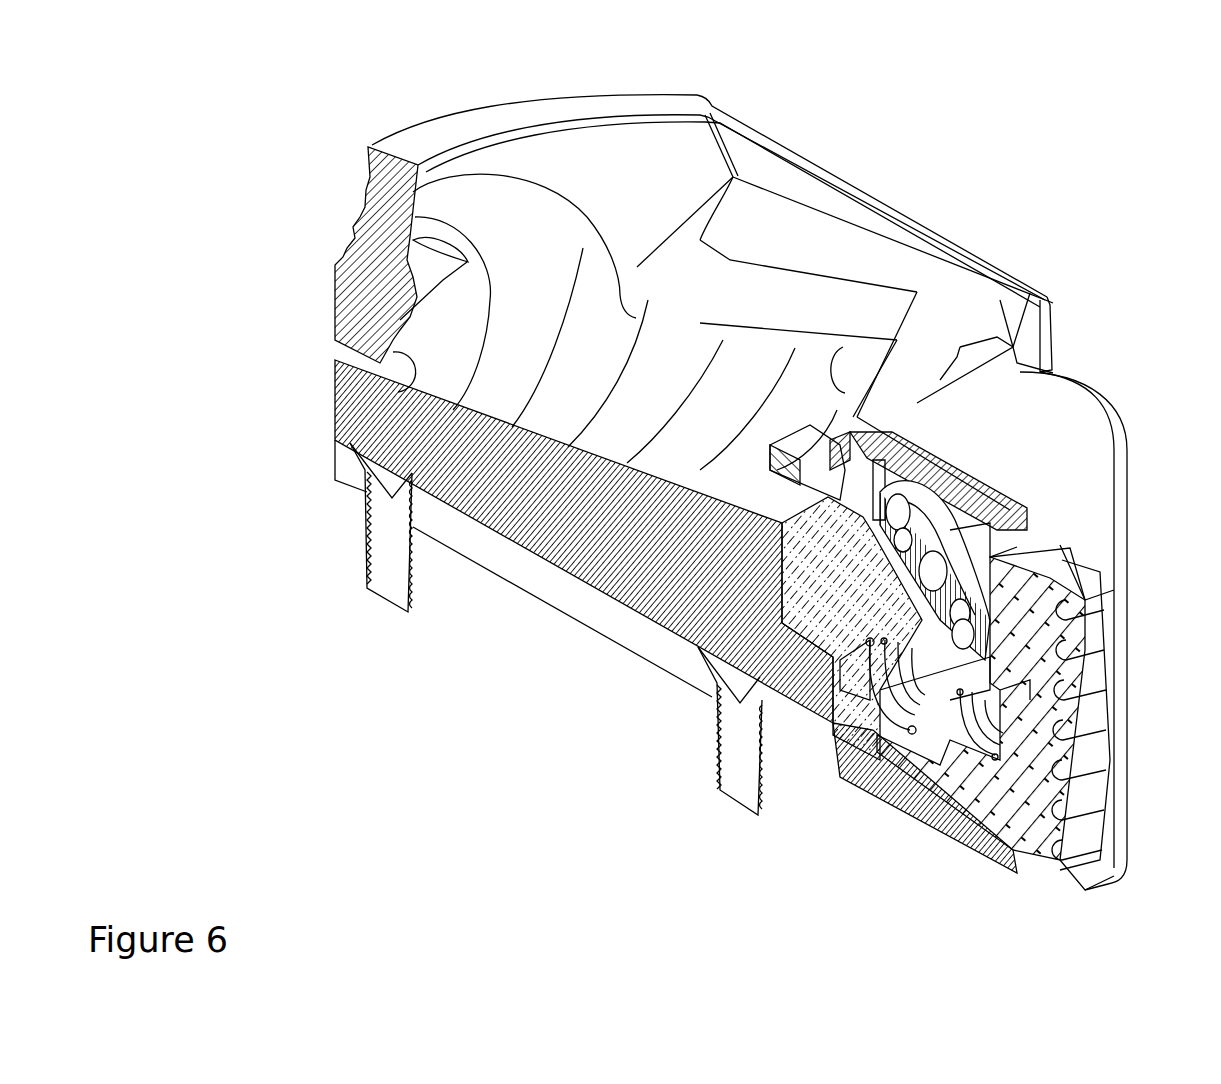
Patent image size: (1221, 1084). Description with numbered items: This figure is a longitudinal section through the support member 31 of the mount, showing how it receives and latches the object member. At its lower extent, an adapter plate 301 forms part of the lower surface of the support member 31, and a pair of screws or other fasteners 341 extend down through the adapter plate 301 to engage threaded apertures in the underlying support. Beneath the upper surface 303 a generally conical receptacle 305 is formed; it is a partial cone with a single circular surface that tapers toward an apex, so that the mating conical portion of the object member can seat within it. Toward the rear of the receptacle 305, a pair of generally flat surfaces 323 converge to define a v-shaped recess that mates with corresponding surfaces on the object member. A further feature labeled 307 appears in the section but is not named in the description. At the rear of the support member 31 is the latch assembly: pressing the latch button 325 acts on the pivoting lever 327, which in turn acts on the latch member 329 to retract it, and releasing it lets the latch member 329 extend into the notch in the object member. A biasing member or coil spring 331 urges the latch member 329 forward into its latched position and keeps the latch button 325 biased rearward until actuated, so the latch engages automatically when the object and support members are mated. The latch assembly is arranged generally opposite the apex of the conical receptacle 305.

The support member 31 is at (259, 260).
The adapter plate 301 is at (552, 590).
The upper surface 303 is at (466, 116).
The conical receptacle 305 is at (537, 270).
The top groove 307 is at (678, 345).
The generally flat surfaces 323 is at (920, 345).
The latch button 325 is at (1103, 840).
The pivoting lever 327 is at (950, 548).
The latch member 329 is at (833, 470).
The coil spring 331 is at (917, 710).
The screws or other fasteners 341 is at (385, 583).